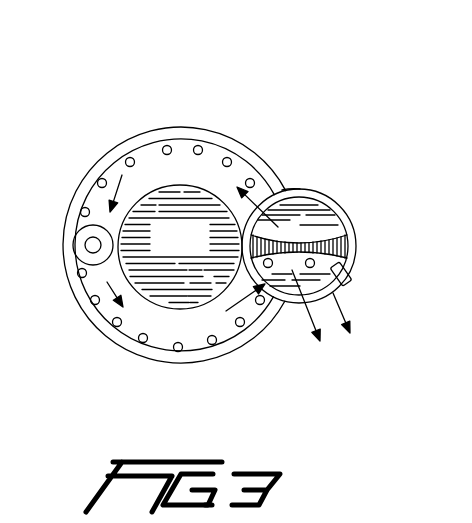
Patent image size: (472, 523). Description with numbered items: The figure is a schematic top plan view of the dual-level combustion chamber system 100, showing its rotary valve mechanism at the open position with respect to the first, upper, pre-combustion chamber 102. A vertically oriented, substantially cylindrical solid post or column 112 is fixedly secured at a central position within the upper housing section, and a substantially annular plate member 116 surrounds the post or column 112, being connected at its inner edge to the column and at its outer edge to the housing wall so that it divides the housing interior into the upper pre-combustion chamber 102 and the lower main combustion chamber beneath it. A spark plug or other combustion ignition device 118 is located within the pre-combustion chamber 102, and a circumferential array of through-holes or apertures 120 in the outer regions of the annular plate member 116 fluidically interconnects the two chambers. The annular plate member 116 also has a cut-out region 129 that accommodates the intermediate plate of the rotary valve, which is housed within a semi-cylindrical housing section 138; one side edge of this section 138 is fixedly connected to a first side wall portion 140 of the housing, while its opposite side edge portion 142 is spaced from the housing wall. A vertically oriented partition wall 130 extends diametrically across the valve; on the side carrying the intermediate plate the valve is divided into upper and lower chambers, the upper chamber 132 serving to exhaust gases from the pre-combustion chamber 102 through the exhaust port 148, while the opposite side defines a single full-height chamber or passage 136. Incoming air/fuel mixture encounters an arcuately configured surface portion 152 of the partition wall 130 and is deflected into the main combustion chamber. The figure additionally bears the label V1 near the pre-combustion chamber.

The dual-level combustion chamber system 100 is at (193, 192).
The first upper pre-combustion chamber 102 is at (212, 150).
The solid post or column 112 is at (205, 250).
The annular plate member 116 is at (199, 322).
The spark plug or combustion ignition device 118 is at (75, 235).
The through-holes or apertures 120 is at (166, 146).
The cut-out region 129 is at (266, 304).
The partition wall 130 is at (342, 235).
The upper chamber 132 is at (337, 270).
The single chamber or passage 136 is at (302, 220).
The semi-cylindrical housing section 138 is at (343, 192).
The first side wall portion 140 is at (282, 190).
The opposite side edge portion 142 is at (345, 275).
The exhaust port 148 is at (313, 307).
The arcuately configured surface portion 152 is at (278, 253).
The valve V1 label V1 is at (200, 178).